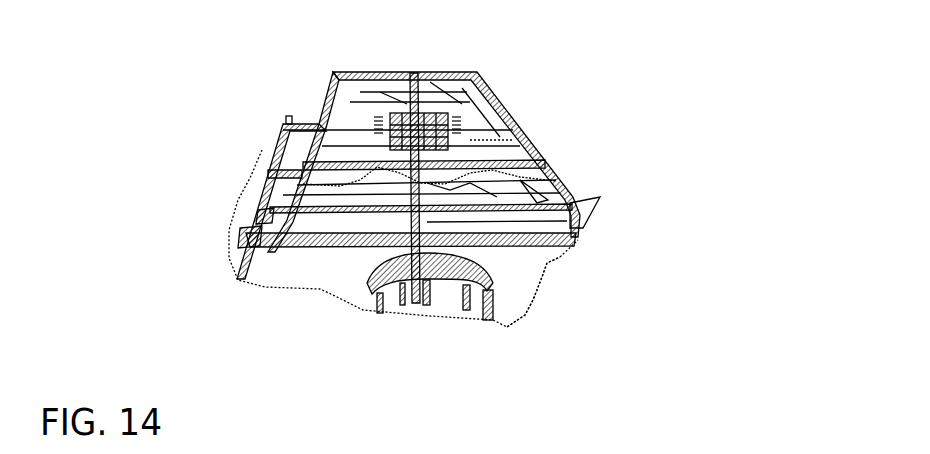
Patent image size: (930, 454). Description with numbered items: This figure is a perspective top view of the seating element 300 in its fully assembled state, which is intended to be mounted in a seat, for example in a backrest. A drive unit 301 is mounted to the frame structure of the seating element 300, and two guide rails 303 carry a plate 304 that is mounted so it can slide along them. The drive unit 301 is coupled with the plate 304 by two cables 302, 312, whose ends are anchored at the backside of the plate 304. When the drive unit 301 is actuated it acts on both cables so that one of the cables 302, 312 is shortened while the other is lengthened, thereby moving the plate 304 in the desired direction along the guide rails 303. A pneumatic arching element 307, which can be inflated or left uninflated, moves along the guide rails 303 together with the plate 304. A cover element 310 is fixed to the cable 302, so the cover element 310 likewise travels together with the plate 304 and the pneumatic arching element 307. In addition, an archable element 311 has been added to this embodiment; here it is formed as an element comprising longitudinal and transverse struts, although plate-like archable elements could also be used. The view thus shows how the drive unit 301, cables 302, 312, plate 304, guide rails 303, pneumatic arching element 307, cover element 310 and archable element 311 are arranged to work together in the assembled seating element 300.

The seating element 300 is at (200, 298).
The drive unit 301 is at (236, 203).
The cable 302 is at (417, 250).
The guide rails 303 is at (288, 183).
The plate 304 is at (491, 155).
The pneumatic arching element 307 is at (343, 180).
The cover element 310 is at (530, 220).
The archable element 311 is at (347, 260).
The cable 312 is at (430, 78).